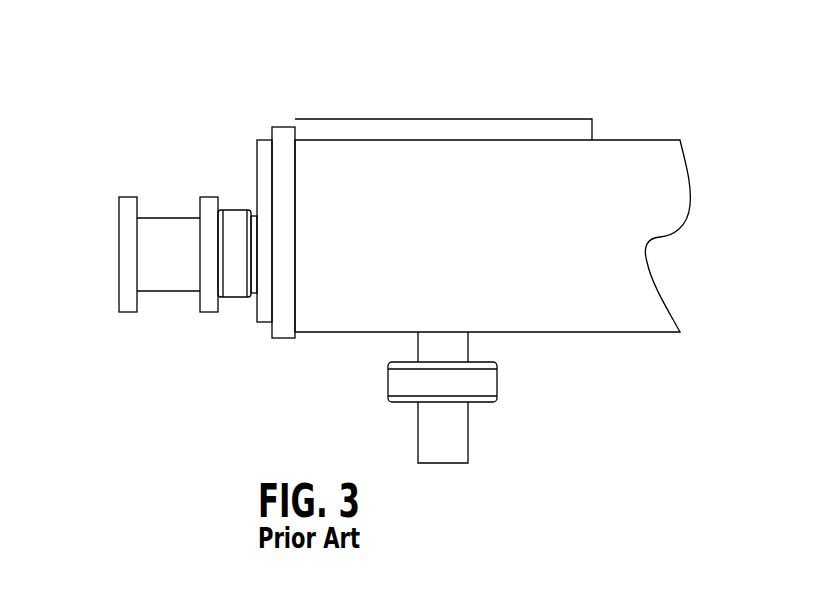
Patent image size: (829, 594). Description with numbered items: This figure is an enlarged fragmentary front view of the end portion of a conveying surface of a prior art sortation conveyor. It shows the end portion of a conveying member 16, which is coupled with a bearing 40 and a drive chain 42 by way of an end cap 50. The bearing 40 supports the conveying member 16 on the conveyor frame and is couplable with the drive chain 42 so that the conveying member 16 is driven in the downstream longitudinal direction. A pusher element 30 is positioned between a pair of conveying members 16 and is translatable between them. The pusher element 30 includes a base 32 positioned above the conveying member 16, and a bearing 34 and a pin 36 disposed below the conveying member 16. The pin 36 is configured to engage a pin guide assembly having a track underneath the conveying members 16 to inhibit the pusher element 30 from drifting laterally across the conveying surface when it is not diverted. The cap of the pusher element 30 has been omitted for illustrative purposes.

The conveying member 16 is at (497, 262).
The pusher element 30 is at (525, 99).
The base 32 is at (455, 119).
The bearing 34 is at (485, 380).
The pin 36 is at (458, 430).
The bearing 40 is at (233, 218).
The drive chain 42 is at (129, 298).
The end cap 50 is at (281, 140).